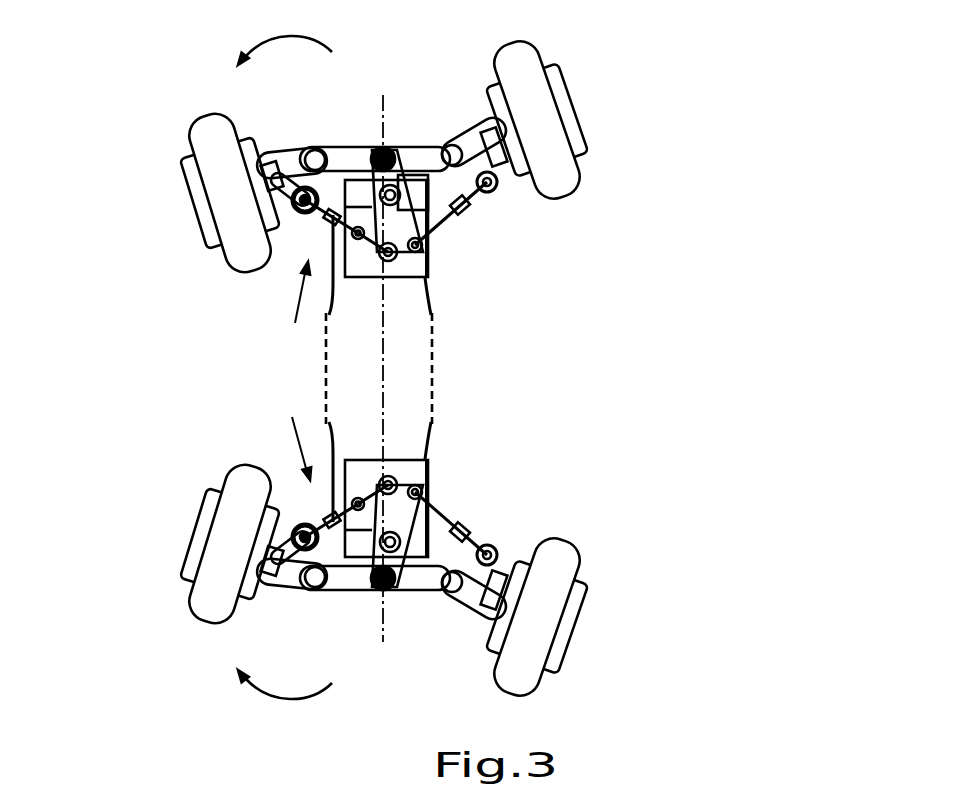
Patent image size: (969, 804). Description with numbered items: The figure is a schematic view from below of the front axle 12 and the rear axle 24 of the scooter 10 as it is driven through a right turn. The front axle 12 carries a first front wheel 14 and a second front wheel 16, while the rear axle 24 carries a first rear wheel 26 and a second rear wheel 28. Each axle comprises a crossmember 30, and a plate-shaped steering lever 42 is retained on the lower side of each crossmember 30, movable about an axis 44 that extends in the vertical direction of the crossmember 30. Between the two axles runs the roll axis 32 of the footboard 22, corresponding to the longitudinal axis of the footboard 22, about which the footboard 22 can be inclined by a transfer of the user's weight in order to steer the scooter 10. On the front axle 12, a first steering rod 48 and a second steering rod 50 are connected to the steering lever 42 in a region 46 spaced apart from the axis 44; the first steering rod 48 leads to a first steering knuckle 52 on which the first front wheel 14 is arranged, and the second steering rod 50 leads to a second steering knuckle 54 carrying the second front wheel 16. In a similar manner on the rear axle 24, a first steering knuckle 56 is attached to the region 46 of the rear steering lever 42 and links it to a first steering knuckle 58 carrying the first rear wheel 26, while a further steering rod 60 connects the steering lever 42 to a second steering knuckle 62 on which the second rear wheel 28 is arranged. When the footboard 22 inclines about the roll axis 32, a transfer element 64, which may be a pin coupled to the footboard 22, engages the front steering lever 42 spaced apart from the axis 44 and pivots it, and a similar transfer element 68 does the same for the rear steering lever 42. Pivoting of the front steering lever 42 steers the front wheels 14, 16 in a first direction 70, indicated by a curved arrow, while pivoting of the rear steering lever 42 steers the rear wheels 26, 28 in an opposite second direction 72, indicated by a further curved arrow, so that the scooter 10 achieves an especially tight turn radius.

The scooter 10 is at (168, 95).
The front axle 12 is at (291, 310).
The first front wheel 14 is at (545, 116).
The second front wheel 16 is at (216, 194).
The footboard 22 is at (337, 378).
The rear axle 24 is at (293, 430).
The first rear wheel 26 is at (545, 620).
The second rear wheel 28 is at (216, 543).
The crossmember 30 is at (352, 155).
The roll axis 32 is at (385, 358).
The steering lever 42 is at (440, 217).
The axis 44 is at (393, 145).
The region 46 is at (437, 280).
The first steering rod 48 is at (450, 232).
The second steering rod 50 is at (300, 225).
The first steering knuckle 52 is at (450, 130).
The second steering knuckle 54 is at (288, 157).
The first steering knuckle 56 is at (452, 500).
The first steering knuckle 58 is at (455, 630).
The further steering rod 60 is at (325, 523).
The second steering knuckle 62 is at (288, 580).
The transfer element 64 is at (478, 197).
The transfer element 68 is at (470, 546).
The first direction 70 is at (270, 36).
The second direction 72 is at (275, 702).